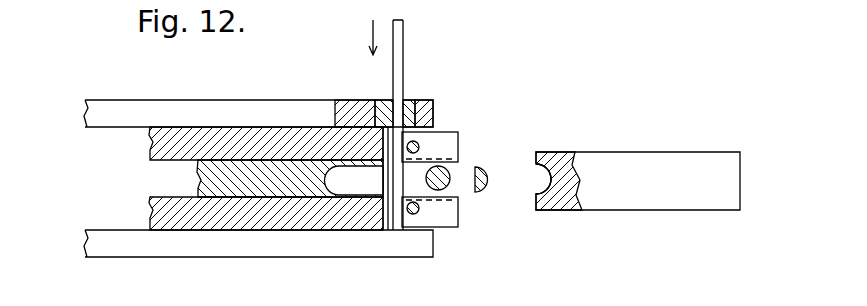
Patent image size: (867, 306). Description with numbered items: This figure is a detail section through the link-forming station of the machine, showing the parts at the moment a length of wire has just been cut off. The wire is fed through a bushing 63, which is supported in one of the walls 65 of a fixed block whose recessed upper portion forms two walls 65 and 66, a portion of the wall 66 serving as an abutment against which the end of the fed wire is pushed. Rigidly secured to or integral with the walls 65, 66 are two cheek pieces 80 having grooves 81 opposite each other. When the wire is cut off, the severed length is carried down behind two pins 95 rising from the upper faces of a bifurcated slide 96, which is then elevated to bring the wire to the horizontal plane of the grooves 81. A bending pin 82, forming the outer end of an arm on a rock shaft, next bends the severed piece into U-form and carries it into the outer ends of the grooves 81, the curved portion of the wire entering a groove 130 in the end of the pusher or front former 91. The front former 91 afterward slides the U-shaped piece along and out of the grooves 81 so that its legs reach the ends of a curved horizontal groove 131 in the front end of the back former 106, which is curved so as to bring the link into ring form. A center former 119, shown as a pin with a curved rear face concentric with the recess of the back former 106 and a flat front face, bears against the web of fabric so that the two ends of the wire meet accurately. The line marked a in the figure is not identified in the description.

The bushing 63 is at (411, 106).
The wall 65 is at (346, 106).
The wall 66 is at (345, 244).
The cheek pieces 80 is at (151, 213).
The grooves 81 is at (196, 193).
The bending pin 82 is at (446, 176).
The pusher or front former 91 is at (272, 186).
The pins 95 is at (417, 145).
The bifurcated slide 96 is at (446, 140).
The back former 106 is at (591, 158).
The center former 119 is at (489, 176).
The groove 130 is at (327, 179).
The curved horizontal groove 131 is at (538, 190).
The rod a is at (404, 48).